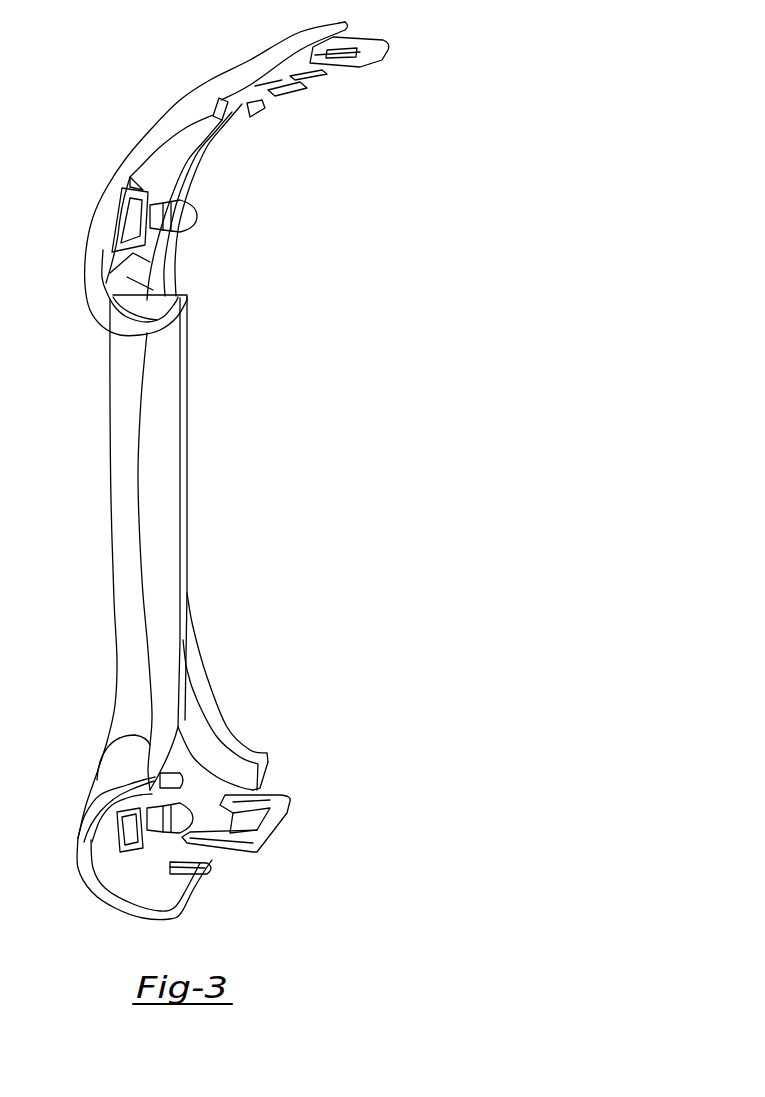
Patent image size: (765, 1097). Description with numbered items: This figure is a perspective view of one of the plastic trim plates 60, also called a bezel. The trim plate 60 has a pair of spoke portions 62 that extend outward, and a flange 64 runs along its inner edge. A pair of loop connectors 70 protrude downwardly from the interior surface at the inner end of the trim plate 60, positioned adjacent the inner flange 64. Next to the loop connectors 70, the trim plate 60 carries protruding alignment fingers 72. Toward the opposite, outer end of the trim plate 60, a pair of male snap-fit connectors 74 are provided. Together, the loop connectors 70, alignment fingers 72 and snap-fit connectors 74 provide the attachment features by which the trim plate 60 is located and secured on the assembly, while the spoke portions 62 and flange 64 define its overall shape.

The trim plate 60 is at (170, 76).
The spoke portion 62 is at (127, 330).
The flange 64 is at (268, 760).
The loop connector 70 is at (370, 64).
The alignment finger 72 is at (293, 78).
The male snap-fit connector 74 is at (183, 217).